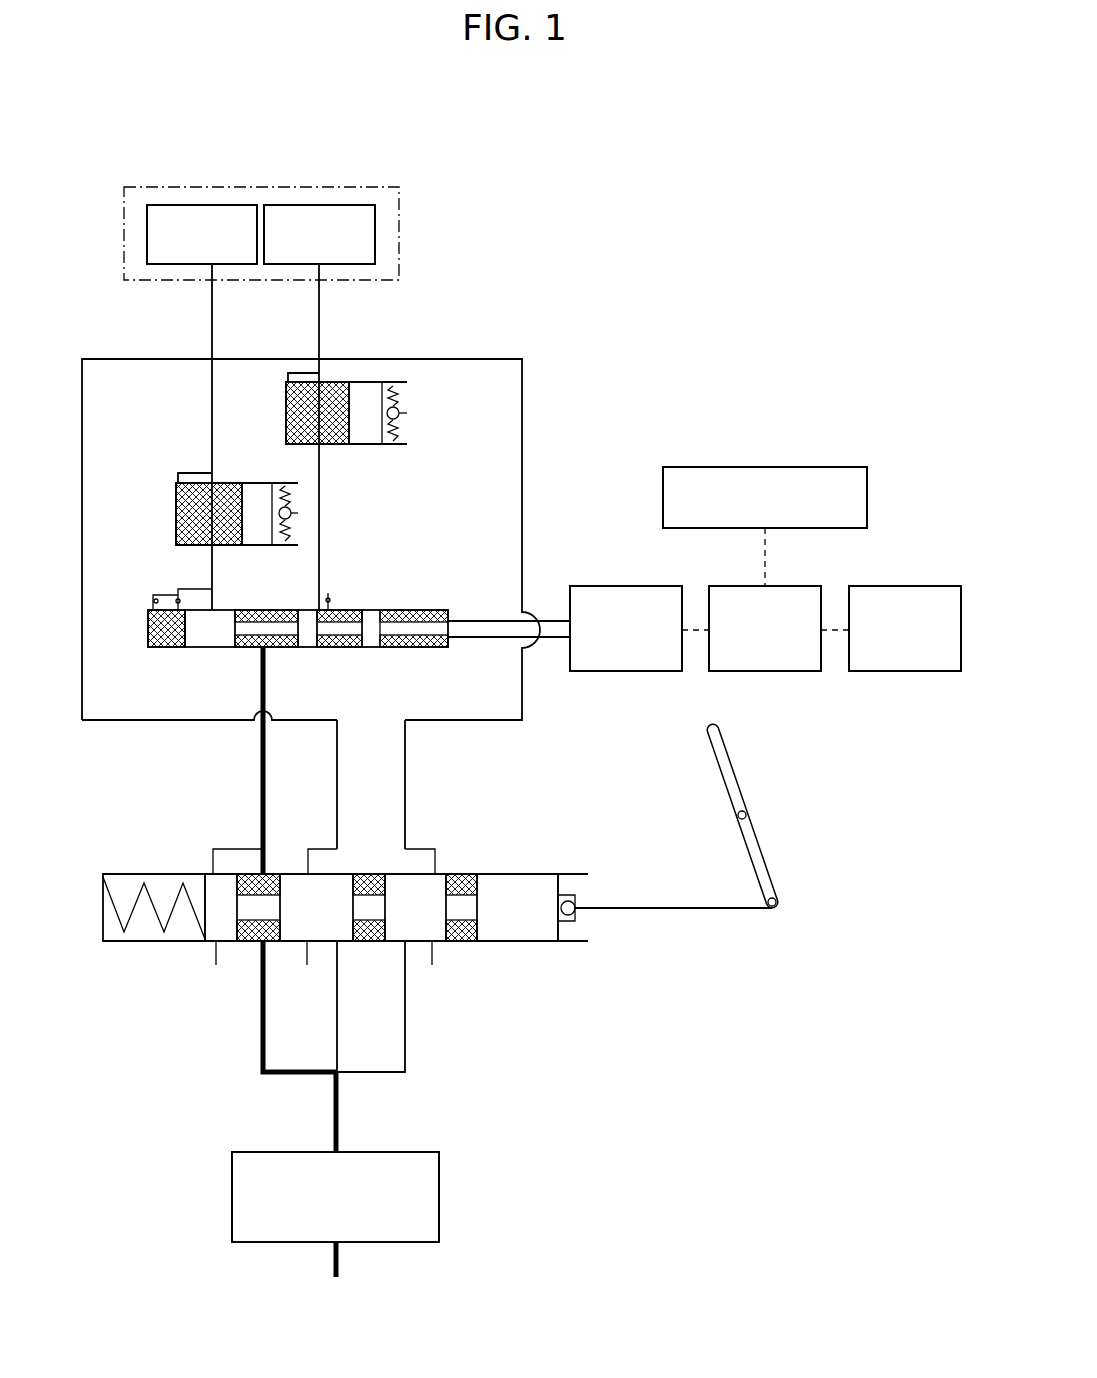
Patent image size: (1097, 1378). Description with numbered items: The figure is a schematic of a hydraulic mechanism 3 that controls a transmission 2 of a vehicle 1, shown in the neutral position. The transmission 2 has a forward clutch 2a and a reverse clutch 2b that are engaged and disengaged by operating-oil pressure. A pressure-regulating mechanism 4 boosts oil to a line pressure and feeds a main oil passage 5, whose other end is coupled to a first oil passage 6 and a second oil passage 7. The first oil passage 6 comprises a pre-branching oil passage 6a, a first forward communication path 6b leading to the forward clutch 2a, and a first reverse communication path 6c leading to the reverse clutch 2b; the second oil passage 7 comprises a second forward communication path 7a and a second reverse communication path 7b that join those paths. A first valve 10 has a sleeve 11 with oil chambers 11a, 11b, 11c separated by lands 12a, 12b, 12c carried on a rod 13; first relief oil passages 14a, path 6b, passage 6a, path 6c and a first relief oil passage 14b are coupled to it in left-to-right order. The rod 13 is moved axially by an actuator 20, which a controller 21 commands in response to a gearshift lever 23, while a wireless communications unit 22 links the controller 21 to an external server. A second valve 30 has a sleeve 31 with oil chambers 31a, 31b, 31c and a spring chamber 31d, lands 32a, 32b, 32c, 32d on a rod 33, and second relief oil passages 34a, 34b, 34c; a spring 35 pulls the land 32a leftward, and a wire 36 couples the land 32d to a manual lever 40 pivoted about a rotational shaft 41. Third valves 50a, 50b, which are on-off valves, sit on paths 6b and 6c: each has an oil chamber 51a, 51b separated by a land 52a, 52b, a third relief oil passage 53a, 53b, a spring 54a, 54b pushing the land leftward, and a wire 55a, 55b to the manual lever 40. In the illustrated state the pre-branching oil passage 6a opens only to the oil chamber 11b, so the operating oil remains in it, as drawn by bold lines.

The vehicle 1 is at (111, 126).
The transmission 2 is at (393, 187).
The forward clutch 2a is at (178, 205).
The reverse clutch 2b is at (288, 205).
The hydraulic mechanism 3 is at (499, 312).
The pressure-regulating mechanism 4 is at (232, 1167).
The main oil passage 5 is at (340, 1130).
The first oil passage 6 is at (260, 1054).
The pre-branching oil passage 6a is at (260, 1032).
The first forward communication path 6b is at (212, 305).
The first reverse communication path 6c is at (319, 305).
The second oil passage 7 is at (407, 1052).
The second forward communication path 7a is at (339, 1035).
The second reverse communication path 7b is at (407, 1028).
The first valve 10 is at (152, 650).
The sleeve 11 is at (148, 628).
The oil chamber 11a is at (183, 650).
The oil chamber 11b is at (278, 650).
The oil chamber 11c is at (337, 650).
The land 12a is at (222, 622).
The land 12b is at (306, 622).
The land 12c is at (370, 612).
The rod 13 is at (557, 614).
The first relief oil passages 14a is at (158, 597).
The first relief oil passage 14b is at (330, 595).
The actuator 20 is at (667, 586).
The controller 21 is at (808, 586).
The wireless communications unit 22 is at (852, 467).
The gearshift lever 23 is at (947, 586).
The second valve 30 is at (125, 874).
The sleeve 31 is at (103, 915).
The oil chamber 31a is at (284, 945).
The oil chamber 31b is at (370, 945).
The oil chamber 31c is at (462, 945).
The spring chamber 31d is at (150, 937).
The land 32a is at (215, 890).
The land 32b is at (297, 895).
The land 32c is at (398, 895).
The land 32d is at (516, 895).
The rod 33 is at (480, 925).
The second relief oil passages 34a is at (225, 874).
The second relief oil passages 34b is at (318, 874).
The second relief oil passages 34c is at (420, 874).
The spring 35 is at (128, 930).
The wire 36 is at (648, 912).
The manual lever 40 is at (735, 765).
The rotational shaft 41 is at (748, 813).
The third valve 50a is at (176, 490).
The third valve 50b is at (286, 395).
The oil chamber 51a is at (176, 531).
The oil chamber 51b is at (332, 445).
The land 52a is at (282, 470).
The land 52b is at (375, 445).
The third relief oil passage 53a is at (190, 473).
The third relief oil passage 53b is at (293, 373).
The spring 54a is at (300, 530).
The spring 54b is at (410, 427).
The wire 55a is at (300, 511).
The wire 55b is at (409, 412).